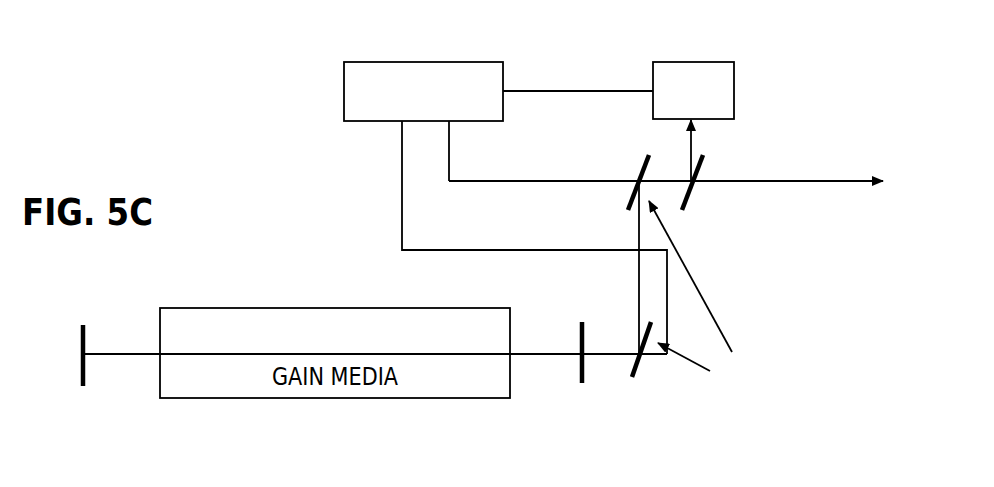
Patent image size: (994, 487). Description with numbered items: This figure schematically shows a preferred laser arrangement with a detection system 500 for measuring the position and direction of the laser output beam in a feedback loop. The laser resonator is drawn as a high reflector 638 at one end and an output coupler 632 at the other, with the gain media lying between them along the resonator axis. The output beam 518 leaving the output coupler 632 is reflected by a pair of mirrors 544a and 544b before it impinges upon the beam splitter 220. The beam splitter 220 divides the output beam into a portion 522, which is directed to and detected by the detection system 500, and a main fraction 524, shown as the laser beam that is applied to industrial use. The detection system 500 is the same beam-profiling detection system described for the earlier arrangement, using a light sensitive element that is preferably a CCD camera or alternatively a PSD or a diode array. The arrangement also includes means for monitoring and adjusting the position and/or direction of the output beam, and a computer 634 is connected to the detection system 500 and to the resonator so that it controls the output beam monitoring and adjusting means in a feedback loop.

The computer 634 is at (399, 62).
The detection system 500 is at (692, 62).
The portion 522 is at (690, 151).
The mirror 544b is at (640, 165).
The beam splitter 220 is at (689, 197).
The main fraction 524 is at (853, 184).
The high reflector 638 is at (80, 370).
The output coupler 632 is at (578, 340).
The output beam 518 is at (600, 350).
The mirror 544a is at (640, 378).